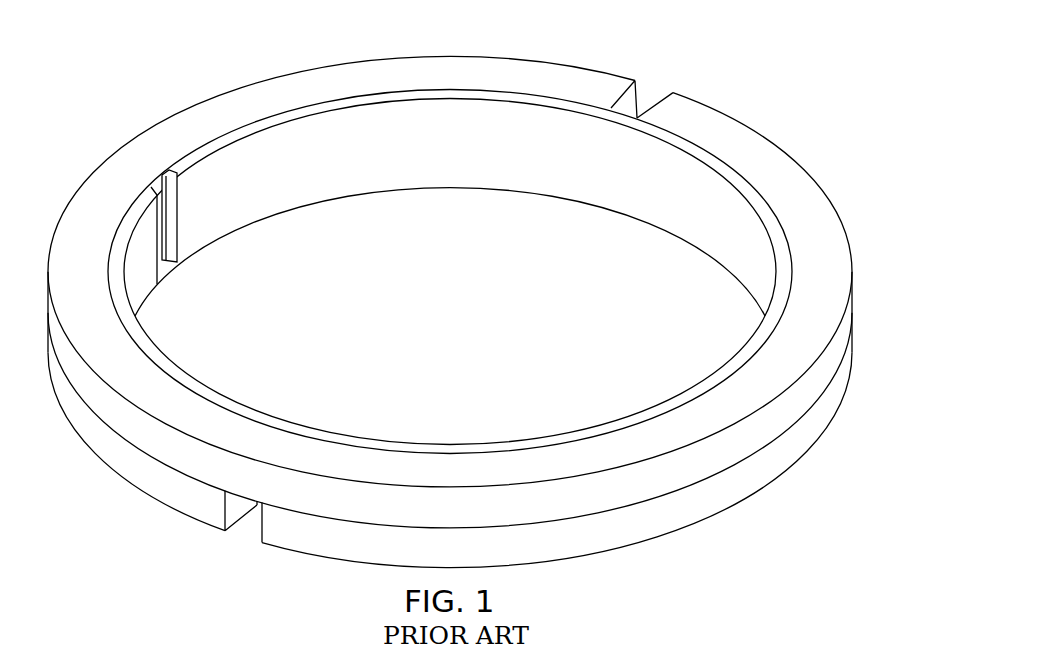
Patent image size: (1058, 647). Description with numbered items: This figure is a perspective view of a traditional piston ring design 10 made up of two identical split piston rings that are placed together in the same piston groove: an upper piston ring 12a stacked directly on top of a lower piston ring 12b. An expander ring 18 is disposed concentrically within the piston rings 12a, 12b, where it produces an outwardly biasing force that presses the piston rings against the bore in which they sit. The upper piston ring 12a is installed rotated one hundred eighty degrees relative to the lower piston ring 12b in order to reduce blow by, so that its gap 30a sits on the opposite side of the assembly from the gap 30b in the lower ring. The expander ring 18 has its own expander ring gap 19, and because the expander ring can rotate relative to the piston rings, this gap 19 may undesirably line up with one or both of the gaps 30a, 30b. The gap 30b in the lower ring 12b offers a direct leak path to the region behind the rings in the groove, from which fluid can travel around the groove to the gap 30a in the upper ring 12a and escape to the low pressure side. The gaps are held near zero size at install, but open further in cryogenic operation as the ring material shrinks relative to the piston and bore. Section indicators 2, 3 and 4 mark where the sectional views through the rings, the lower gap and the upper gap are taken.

The piston ring design 10 is at (503, 301).
The upper piston ring 12a is at (855, 312).
The lower piston ring 12b is at (855, 382).
The expander ring 18 is at (360, 135).
The expander ring gap 19 is at (170, 210).
The gap in the upper ring 30a is at (650, 100).
The gap in the lower ring 30b is at (252, 528).
The section line 2- 2 is at (653, 405).
The section line 3- 3 is at (318, 427).
The section line 4- 4 is at (715, 65).